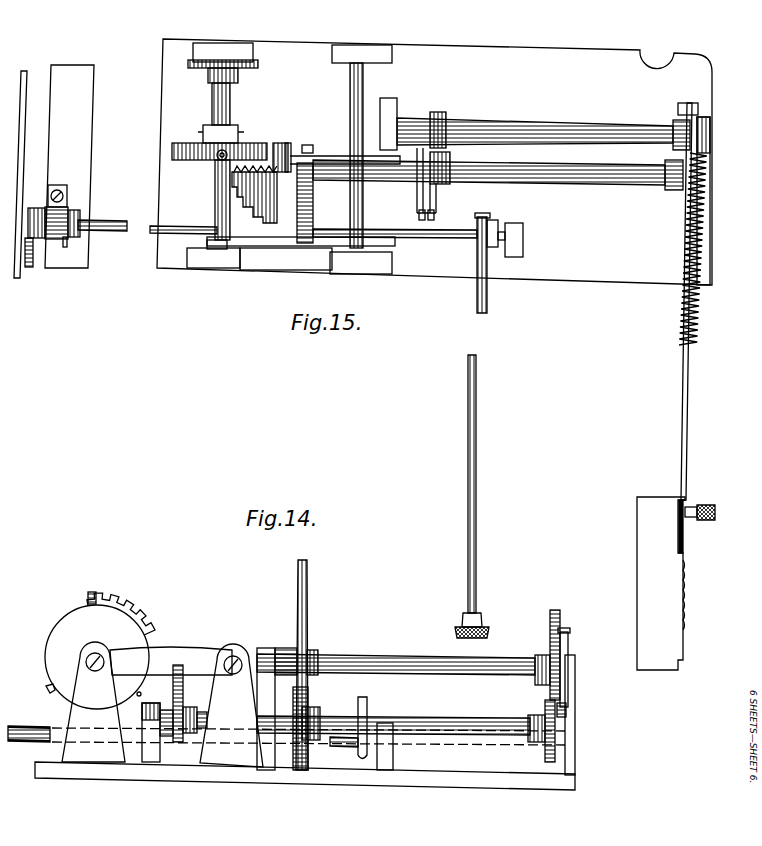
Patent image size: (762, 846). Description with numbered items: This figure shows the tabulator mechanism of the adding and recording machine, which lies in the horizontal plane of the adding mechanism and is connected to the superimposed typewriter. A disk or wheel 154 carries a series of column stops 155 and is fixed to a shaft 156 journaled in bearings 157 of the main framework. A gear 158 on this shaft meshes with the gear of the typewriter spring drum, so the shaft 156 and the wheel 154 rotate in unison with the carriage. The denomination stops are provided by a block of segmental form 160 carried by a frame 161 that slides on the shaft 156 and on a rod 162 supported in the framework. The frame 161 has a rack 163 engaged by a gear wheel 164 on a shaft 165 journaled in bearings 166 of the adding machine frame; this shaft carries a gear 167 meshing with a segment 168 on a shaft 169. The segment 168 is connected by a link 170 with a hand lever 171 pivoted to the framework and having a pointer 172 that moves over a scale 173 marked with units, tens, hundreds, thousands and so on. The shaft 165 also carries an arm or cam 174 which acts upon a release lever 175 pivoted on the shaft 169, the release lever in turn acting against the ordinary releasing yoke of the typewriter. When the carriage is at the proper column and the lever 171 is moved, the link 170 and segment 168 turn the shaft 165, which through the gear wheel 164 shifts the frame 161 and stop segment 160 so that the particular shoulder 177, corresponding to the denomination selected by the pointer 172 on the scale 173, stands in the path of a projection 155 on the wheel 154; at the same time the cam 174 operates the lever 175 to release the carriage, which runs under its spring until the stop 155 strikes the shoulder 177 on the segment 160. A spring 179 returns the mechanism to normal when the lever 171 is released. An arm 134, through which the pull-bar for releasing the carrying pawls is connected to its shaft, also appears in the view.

In FIG. 15, the arm 134 is at (492, 220).
In FIG. 15, the disk or wheel 154 is at (183, 146).
In FIG. 14, the disk or wheel 154 is at (55, 652).
In FIG. 15, the column stops 155 is at (212, 162).
In FIG. 14, the column stops 155 is at (90, 609).
In FIG. 15, the shaft 156 is at (230, 108).
In FIG. 14, the shaft 156 is at (92, 653).
In FIG. 15, the bearings 157 is at (253, 52).
In FIG. 14, the bearings 157 is at (93, 702).
In FIG. 15, the gear 158 is at (252, 66).
In FIG. 15, the block of segmental form 160 is at (273, 148).
In FIG. 14, the block of segmental form 160 is at (122, 604).
In FIG. 15, the frame 161 is at (266, 248).
In FIG. 14, the frame 161 is at (180, 650).
In FIG. 15, the rod 162 is at (363, 212).
In FIG. 14, the rod 162 is at (246, 650).
In FIG. 15, the rack 163 is at (313, 200).
In FIG. 14, the rack 163 is at (192, 663).
In FIG. 15, the gear wheel 164 is at (313, 150).
In FIG. 14, the gear wheel 164 is at (205, 702).
In FIG. 15, the shaft 165 is at (540, 180).
In FIG. 14, the shaft 165 is at (432, 716).
In FIG. 15, the bearings 166 is at (289, 143).
In FIG. 14, the bearings 166 is at (142, 718).
In FIG. 14, the gear 167 is at (547, 713).
In FIG. 15, the segment 168 is at (672, 163).
In FIG. 14, the segment 168 is at (560, 680).
In FIG. 15, the shaft 169 is at (522, 140).
In FIG. 14, the shaft 169 is at (388, 662).
In FIG. 15, the link 170 is at (685, 472).
In FIG. 15, the lever 171 is at (685, 545).
In FIG. 15, the pointer 172 is at (680, 517).
In FIG. 15, the scale 173 is at (672, 645).
In FIG. 15, the arm or cam 174 is at (438, 218).
In FIG. 14, the arm or cam 174 is at (320, 698).
In FIG. 15, the release lever 175 is at (446, 118).
In FIG. 14, the release lever 175 is at (307, 600).
In FIG. 15, the shoulders or stops 177 is at (264, 214).
In FIG. 14, the shoulders or stops 177 is at (96, 596).
In FIG. 15, the spring 179 is at (705, 225).